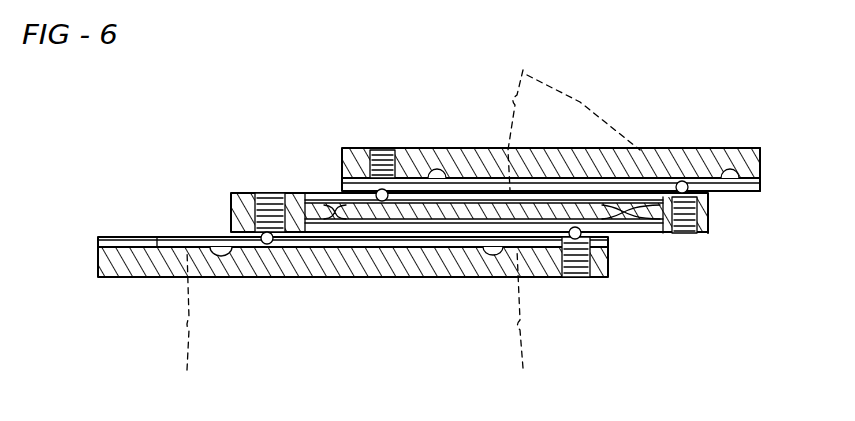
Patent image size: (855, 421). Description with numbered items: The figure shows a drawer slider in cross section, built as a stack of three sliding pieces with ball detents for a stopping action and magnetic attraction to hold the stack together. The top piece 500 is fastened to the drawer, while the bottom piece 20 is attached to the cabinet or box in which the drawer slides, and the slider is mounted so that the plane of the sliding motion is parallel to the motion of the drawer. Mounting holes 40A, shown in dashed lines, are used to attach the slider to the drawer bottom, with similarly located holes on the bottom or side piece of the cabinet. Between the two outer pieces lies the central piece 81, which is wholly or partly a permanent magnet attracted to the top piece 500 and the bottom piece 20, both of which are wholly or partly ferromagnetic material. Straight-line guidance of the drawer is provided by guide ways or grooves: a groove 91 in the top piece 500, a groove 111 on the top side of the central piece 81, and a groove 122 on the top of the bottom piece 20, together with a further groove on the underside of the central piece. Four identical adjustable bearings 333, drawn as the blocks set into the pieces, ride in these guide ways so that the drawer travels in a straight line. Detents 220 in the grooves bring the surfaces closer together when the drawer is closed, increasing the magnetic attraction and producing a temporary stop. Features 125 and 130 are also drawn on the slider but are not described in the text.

The bottom piece 20 is at (130, 277).
The mounting holes 40A is at (407, 223).
The central piece 81 is at (231, 214).
The guide way or groove 91 is at (720, 192).
The guide way or groove 111 is at (343, 192).
The guide way or groove 122 is at (197, 248).
The via interconnect 125 is at (603, 230).
The connector block 130 is at (380, 150).
The detents 220 is at (376, 194).
The adjustable bearings 333 is at (262, 192).
The top piece 500 is at (768, 160).